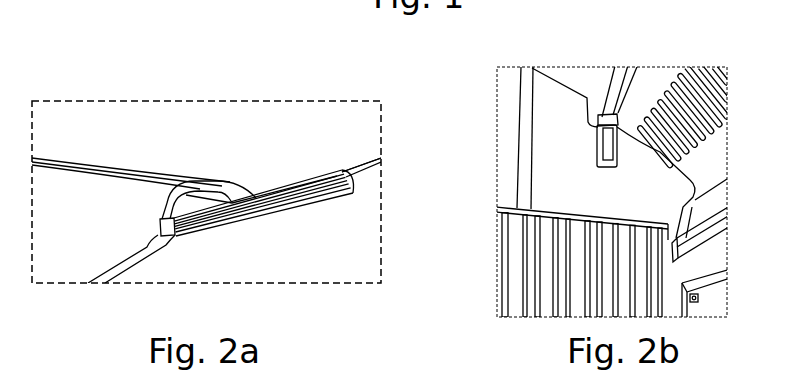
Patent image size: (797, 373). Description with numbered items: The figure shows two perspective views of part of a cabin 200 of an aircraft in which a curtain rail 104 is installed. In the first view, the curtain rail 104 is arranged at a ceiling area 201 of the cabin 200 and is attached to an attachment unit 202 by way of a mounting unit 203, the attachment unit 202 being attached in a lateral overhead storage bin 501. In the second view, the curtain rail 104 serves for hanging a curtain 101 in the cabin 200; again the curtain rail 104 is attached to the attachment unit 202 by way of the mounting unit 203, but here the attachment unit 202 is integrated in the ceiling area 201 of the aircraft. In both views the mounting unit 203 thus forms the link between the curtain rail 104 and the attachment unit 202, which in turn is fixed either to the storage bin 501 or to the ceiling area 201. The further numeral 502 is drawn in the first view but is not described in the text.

In FIG. 2a, the windscreen wiper device 200 is at (58, 84).
In FIG. 2b, the windscreen wiper device 200 is at (745, 86).
In FIG. 2a, the connecting device body 201 is at (252, 108).
In FIG. 2b, the connecting device body 201 is at (582, 78).
In FIG. 2a, the connecting element 202 is at (338, 174).
In FIG. 2b, the connecting element 202 is at (623, 75).
In FIG. 2a, the clip 203 is at (165, 212).
In FIG. 2b, the clip 203 is at (617, 120).
In FIG. 2a, the wiper blade 104 is at (125, 193).
In FIG. 2b, the wiper blade 104 is at (676, 199).
In FIG. 2b, the wiper arm 101 is at (493, 258).
In FIG. 2b, the fin portion 501 is at (707, 160).
In FIG. 2a, the end portion 502 is at (368, 245).